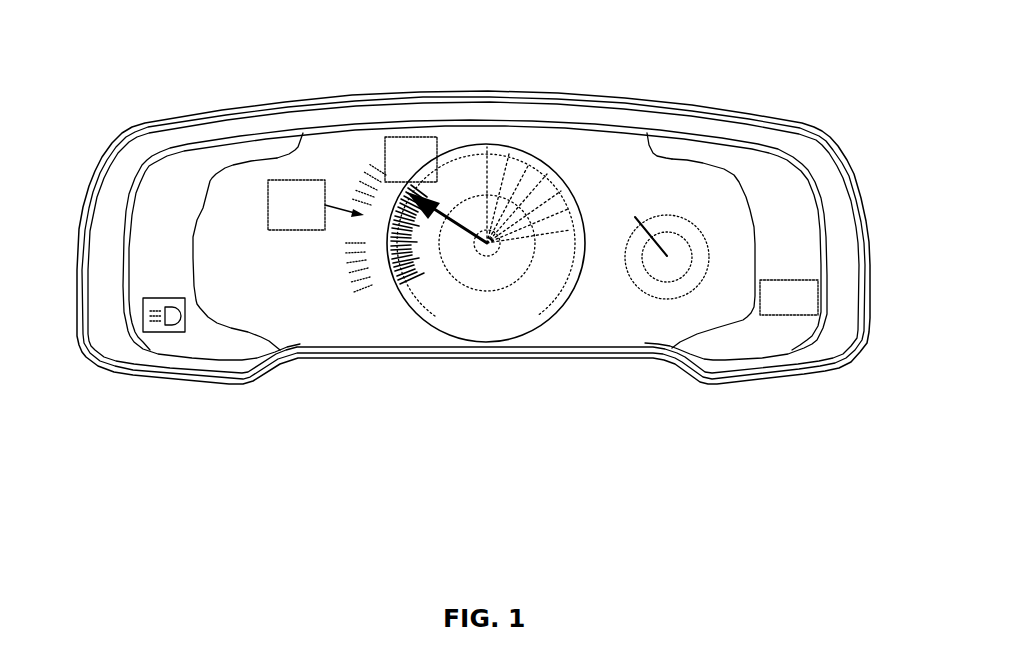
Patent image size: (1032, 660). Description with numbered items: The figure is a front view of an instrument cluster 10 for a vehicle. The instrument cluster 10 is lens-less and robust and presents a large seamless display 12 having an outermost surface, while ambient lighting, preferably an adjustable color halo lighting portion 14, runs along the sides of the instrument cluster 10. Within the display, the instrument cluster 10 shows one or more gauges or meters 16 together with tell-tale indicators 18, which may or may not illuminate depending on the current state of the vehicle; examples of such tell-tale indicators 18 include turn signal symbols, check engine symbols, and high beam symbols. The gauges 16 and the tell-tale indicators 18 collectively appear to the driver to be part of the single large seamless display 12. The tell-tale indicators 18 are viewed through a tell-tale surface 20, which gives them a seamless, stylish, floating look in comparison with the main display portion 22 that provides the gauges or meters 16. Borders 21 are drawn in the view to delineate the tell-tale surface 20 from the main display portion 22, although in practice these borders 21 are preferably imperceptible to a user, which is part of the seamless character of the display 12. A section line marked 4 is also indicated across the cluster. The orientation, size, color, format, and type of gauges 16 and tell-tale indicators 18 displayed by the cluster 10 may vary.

The instrument cluster 10 is at (204, 52).
The seamless display 12 is at (873, 383).
The halo lighting portion 14 is at (120, 298).
The gauges or meters 16 is at (663, 208).
The tell-tale indicators 18 is at (140, 315).
The tell-tale surface 20 is at (163, 197).
The borders 21 is at (273, 157).
The main display portion 22 is at (317, 157).
The section line 4- 4 is at (77, 280).